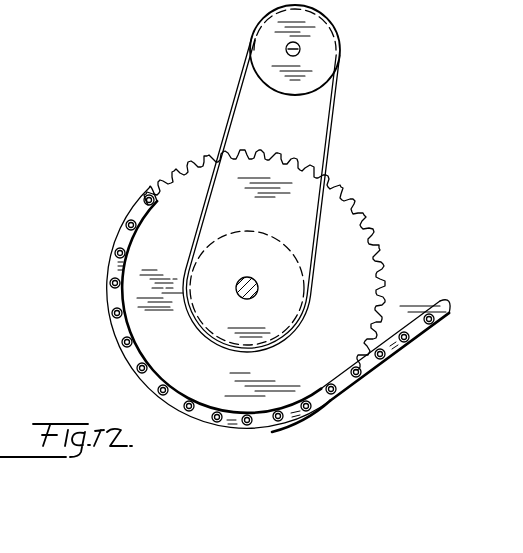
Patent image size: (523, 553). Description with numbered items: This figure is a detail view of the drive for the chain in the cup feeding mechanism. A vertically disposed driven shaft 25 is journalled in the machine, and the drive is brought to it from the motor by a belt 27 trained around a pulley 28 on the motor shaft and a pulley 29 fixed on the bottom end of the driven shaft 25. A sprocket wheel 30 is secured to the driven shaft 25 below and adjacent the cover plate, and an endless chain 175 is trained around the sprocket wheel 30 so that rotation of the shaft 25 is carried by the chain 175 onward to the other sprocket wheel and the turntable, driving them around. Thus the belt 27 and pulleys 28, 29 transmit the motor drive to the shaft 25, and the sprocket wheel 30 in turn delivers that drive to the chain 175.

The driven shaft 25 is at (258, 285).
The belt 27 is at (328, 130).
The pulley 28 is at (327, 43).
The pulley 29 is at (287, 302).
The sprocket wheel 30 is at (362, 263).
The endless chain 175 is at (358, 389).